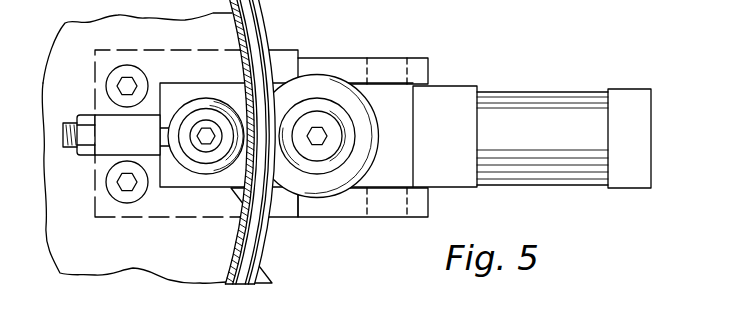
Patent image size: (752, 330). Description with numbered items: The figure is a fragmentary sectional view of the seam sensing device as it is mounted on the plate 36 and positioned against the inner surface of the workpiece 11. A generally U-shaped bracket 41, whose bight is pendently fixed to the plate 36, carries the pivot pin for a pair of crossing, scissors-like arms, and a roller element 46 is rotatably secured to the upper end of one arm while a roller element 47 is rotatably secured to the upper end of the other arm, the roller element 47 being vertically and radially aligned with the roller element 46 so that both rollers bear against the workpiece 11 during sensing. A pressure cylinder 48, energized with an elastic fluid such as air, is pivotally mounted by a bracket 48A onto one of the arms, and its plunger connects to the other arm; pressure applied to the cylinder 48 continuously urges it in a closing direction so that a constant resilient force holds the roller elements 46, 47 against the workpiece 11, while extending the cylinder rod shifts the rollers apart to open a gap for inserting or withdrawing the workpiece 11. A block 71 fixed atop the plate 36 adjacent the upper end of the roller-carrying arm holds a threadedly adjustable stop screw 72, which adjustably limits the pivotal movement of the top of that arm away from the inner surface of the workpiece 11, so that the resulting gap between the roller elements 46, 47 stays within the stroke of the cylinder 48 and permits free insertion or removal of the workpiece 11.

The workpiece 11 is at (229, 256).
The plate 36 is at (197, 265).
The U-shaped bracket 41 is at (285, 208).
The roller element 46 is at (212, 100).
The roller element 47 is at (322, 84).
The pressure cylinder 48 is at (527, 155).
The bracket 48A is at (350, 208).
The block 71 is at (112, 120).
The stop screw 72 is at (70, 149).